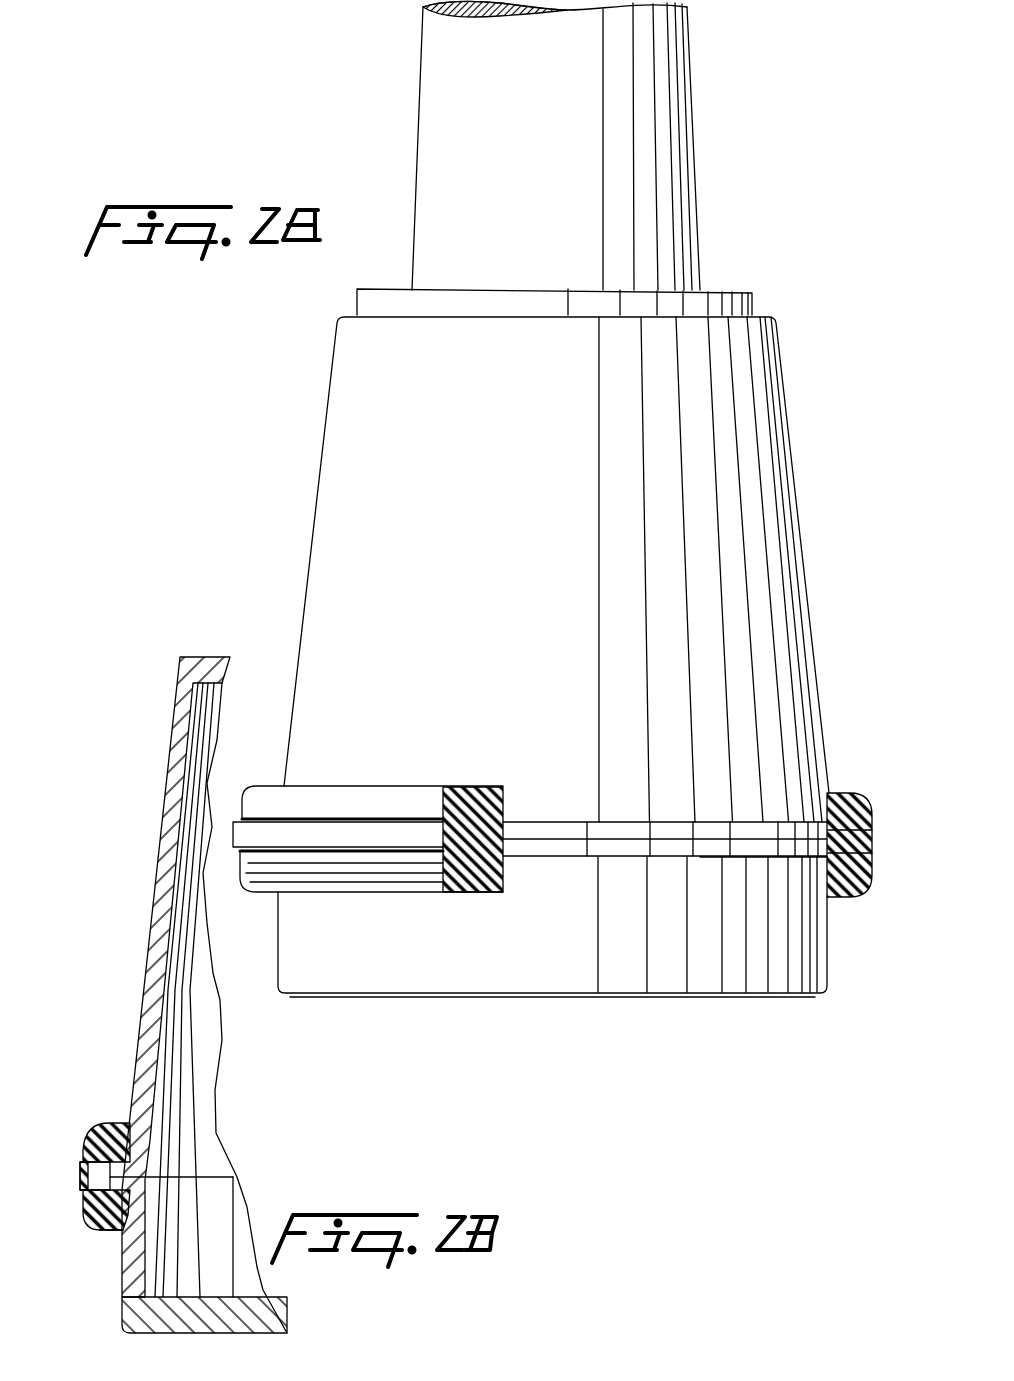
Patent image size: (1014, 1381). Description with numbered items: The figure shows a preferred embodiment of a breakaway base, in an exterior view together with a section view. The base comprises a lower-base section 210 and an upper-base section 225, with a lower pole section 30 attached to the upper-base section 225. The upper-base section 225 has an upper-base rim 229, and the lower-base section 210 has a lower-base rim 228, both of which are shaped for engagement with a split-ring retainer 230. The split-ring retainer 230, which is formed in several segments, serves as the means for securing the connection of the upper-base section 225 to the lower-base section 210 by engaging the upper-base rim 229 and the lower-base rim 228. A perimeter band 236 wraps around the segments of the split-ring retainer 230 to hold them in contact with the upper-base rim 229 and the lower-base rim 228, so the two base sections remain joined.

In FIG. 2A, the lower pole section 30 is at (680, 103).
In FIG. 2A, the upper-base section 225 is at (322, 460).
In FIG. 2B, the upper-base section 225 is at (150, 937).
In FIG. 2A, the lower-base section 210 is at (552, 973).
In FIG. 2B, the lower-base section 210 is at (122, 1303).
In FIG. 2A, the perimeter band 236 is at (318, 835).
In FIG. 2B, the perimeter band 236 is at (83, 1180).
In FIG. 2A, the upper-base rim 229 is at (748, 833).
In FIG. 2B, the upper-base rim 229 is at (92, 1153).
In FIG. 2A, the split-ring retainer 230 is at (850, 793).
In FIG. 2B, the split-ring retainer 230 is at (108, 1123).
In FIG. 2A, the lower-base rim 228 is at (745, 852).
In FIG. 2B, the lower-base rim 228 is at (90, 1217).